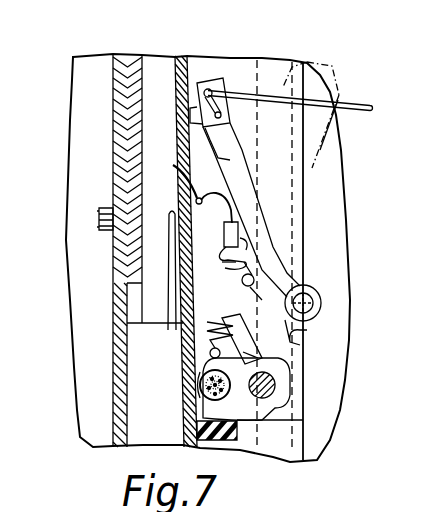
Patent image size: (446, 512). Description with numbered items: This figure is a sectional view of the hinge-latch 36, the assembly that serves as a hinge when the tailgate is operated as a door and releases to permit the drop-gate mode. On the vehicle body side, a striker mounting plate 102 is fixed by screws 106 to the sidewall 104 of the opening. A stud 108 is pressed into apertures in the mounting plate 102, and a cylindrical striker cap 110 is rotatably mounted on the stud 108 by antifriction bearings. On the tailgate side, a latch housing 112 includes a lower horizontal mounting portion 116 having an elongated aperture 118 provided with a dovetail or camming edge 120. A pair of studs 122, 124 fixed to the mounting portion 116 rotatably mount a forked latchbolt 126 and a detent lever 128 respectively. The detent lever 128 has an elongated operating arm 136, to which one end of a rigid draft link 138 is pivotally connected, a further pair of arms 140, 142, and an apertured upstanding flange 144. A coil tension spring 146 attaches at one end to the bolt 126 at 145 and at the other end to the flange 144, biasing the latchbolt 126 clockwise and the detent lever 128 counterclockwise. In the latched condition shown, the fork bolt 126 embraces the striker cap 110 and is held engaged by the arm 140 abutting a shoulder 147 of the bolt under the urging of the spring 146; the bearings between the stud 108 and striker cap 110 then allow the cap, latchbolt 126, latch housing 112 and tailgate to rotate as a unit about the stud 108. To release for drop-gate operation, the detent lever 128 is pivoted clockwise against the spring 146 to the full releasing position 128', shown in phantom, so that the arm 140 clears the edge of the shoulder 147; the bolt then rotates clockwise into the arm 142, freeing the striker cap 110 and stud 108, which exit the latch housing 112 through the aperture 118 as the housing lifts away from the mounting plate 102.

The striker mounting plate 102 is at (133, 54).
The sidewall 104 is at (117, 398).
The screws 106 is at (97, 222).
The stud 108 is at (203, 390).
The cylindrical striker cap 110 is at (200, 378).
The latch housing 112 is at (195, 62).
The lower horizontal mounting portion 116 is at (287, 185).
The elongated aperture 118 is at (196, 203).
The camming edge 120 is at (170, 286).
The stud 122 is at (276, 383).
The stud 124 is at (310, 291).
The forked latchbolt 126 is at (276, 407).
The detent lever 128 is at (313, 255).
The full releasing position 128' is at (330, 91).
The elongated operating arm 136 is at (230, 147).
The rigid draft link 138 is at (363, 110).
The arm 140 is at (253, 339).
The arm 142 is at (307, 331).
The apertured upstanding flange 144 is at (174, 176).
The spring attachment point 145 is at (255, 358).
The coil tension spring 146 is at (222, 262).
The shoulder 147 is at (210, 352).
The hinge-latch 36 is at (315, 165).